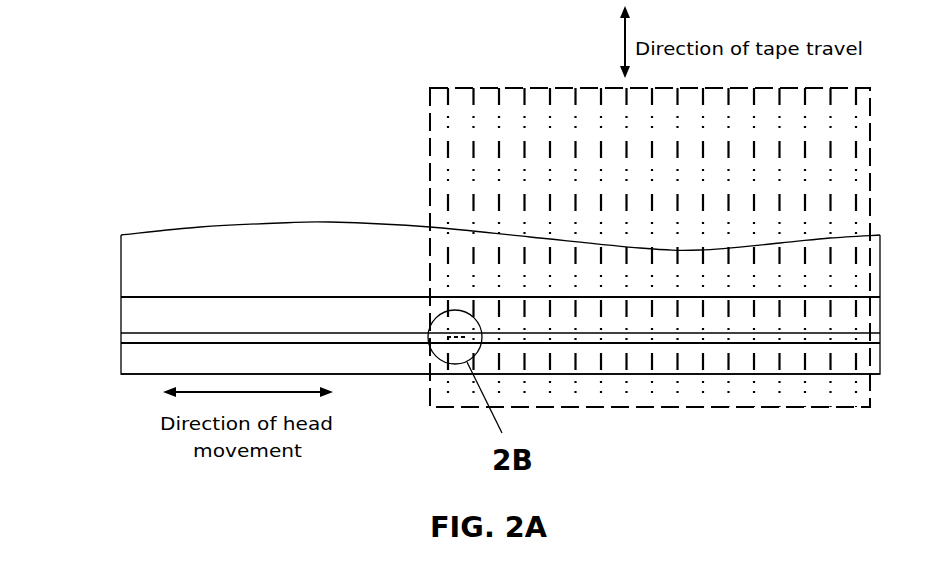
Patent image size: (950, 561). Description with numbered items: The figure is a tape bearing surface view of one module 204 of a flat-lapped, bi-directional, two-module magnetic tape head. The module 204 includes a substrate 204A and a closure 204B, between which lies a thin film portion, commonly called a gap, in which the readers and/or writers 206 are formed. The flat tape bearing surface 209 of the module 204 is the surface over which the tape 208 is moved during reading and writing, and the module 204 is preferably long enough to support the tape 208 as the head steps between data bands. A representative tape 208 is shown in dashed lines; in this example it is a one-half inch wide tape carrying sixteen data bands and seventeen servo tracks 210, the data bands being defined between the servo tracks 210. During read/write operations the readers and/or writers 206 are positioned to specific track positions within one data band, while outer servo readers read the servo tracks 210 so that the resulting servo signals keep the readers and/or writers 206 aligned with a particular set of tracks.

The module 204 is at (451, 256).
The substrate 204A is at (268, 222).
The closure 204B is at (121, 358).
The readers and/or writers 206 is at (436, 334).
The tape 208 is at (430, 93).
The tape bearing surface 209 is at (328, 322).
The servo tracks 210 is at (548, 175).